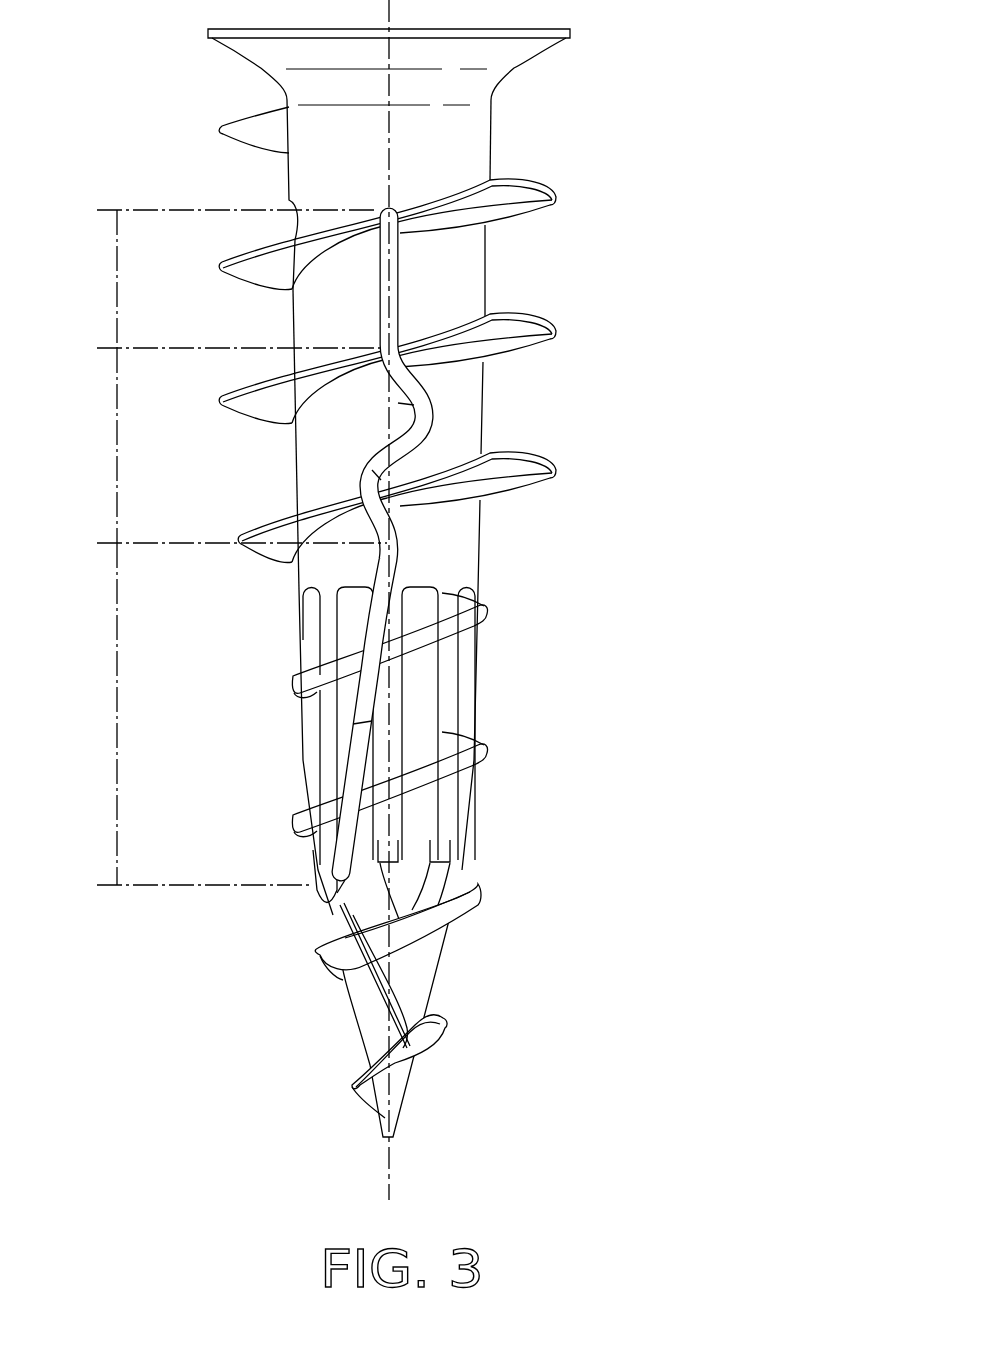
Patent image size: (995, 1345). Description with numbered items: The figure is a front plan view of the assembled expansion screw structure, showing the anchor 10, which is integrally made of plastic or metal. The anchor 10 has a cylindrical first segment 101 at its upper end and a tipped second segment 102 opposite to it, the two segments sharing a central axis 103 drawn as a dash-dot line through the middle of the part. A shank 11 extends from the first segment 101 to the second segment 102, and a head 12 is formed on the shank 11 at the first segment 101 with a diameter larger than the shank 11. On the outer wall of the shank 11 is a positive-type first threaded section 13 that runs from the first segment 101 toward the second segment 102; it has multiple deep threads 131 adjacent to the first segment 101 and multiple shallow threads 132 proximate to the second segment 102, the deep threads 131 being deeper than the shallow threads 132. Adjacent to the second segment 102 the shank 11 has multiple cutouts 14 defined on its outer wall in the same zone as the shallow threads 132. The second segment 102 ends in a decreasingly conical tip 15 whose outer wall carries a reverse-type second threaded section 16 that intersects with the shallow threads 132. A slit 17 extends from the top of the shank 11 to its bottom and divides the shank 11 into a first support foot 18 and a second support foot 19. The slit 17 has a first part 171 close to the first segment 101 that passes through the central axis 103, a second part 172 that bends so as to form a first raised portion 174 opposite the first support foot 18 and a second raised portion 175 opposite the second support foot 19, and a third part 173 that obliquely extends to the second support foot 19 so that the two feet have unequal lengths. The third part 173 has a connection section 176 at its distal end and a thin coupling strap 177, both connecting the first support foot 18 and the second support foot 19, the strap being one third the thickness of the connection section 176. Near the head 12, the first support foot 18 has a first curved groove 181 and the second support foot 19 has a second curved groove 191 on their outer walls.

The anchor 10 is at (449, 584).
The shank 11 is at (417, 372).
The head 12 is at (258, 50).
The first threaded section 13 is at (465, 472).
The deep threads 131 is at (520, 472).
The shallow threads 132 is at (487, 744).
The cutouts 14 is at (428, 685).
The decreasingly conical tip 15 is at (417, 993).
The second threaded section 16 is at (367, 1000).
The slit 17 is at (399, 580).
The first part 171 is at (217, 279).
The second part 172 is at (219, 445).
The third part 173 is at (222, 714).
The first raised portion 174 is at (382, 480).
The second raised portion 175 is at (398, 403).
The connection section 176 is at (337, 893).
The thin coupling strap 177 is at (353, 783).
The first support foot 18 is at (480, 530).
The first curved groove 181 is at (478, 245).
The second support foot 19 is at (348, 568).
The second curved groove 191 is at (287, 222).
The first segment 101 is at (533, 543).
The second segment 102 is at (436, 1140).
The central axis 103 is at (390, 848).